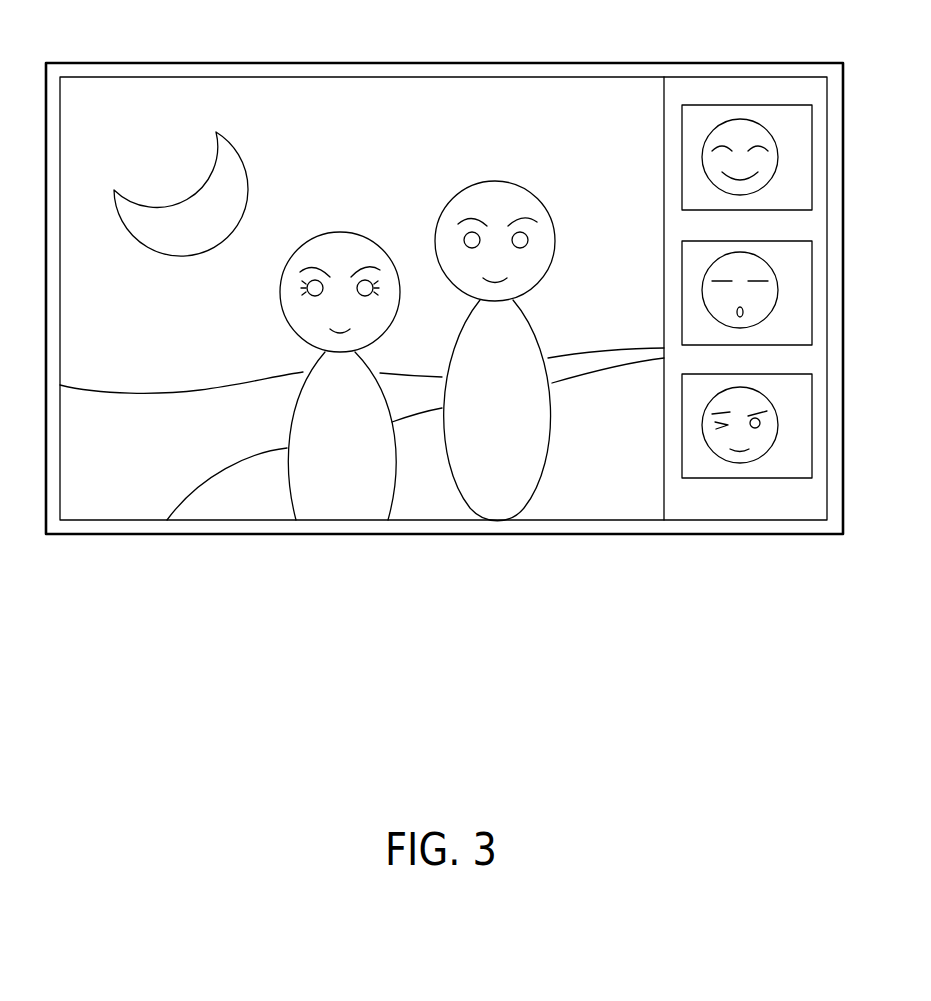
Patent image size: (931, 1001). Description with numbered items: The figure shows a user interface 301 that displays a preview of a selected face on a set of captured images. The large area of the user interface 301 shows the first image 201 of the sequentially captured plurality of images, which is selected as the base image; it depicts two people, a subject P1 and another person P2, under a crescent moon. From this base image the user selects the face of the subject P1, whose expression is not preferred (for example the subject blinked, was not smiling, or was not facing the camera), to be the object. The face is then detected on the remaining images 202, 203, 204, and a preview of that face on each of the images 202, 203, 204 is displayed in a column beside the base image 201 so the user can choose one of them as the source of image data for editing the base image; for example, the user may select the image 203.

The display screen frame 301 is at (513, 62).
The image display area 201 is at (649, 505).
The smiling emoticon option 202 is at (805, 205).
The neutral emoticon option 203 is at (805, 341).
The winking emoticon option 204 is at (805, 476).
The first person in image P1 is at (308, 419).
The second person in image P2 is at (532, 338).